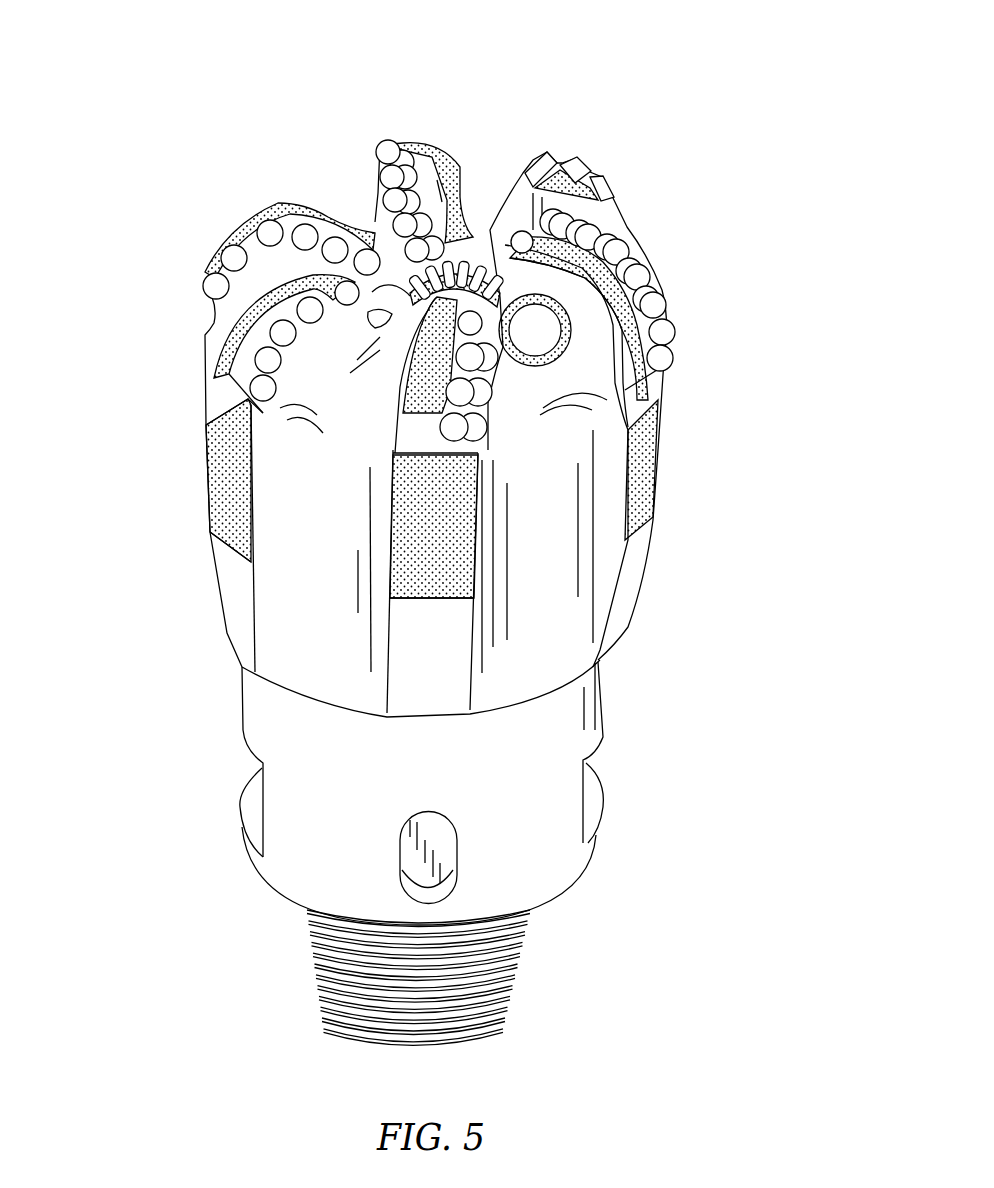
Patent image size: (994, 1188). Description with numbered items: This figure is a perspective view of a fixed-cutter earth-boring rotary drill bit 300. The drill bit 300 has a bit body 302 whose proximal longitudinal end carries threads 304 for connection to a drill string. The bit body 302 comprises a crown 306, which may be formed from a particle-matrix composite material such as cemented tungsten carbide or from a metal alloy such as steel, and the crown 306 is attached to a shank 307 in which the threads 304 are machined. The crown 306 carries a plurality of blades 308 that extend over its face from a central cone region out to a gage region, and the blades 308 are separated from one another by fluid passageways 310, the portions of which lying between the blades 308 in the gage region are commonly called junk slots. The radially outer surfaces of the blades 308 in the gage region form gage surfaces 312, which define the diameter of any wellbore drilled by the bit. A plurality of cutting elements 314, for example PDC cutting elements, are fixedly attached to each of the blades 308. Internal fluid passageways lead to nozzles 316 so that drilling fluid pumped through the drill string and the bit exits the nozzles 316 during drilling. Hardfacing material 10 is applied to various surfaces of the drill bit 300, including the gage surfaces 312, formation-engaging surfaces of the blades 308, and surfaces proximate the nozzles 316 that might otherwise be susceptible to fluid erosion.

The fixed-cutter drill bit 300 is at (235, 93).
The bit body 302 is at (204, 607).
The threads 304 is at (303, 963).
The crown 306 is at (555, 453).
The shank 307 is at (550, 747).
The blades 308 is at (280, 206).
The fluid passageways 310 is at (330, 397).
The gage surfaces 312 is at (203, 493).
The cutting elements 314 is at (407, 145).
The nozzles 316 is at (535, 330).
The hardfacing material 10 is at (423, 140).